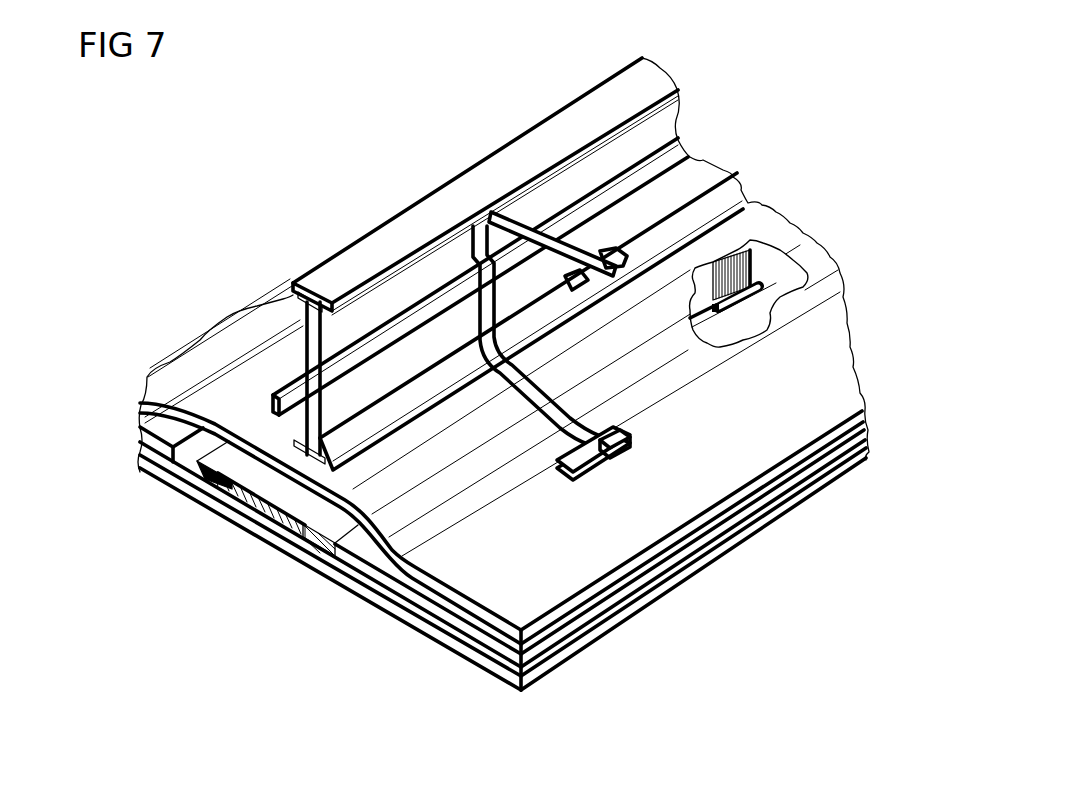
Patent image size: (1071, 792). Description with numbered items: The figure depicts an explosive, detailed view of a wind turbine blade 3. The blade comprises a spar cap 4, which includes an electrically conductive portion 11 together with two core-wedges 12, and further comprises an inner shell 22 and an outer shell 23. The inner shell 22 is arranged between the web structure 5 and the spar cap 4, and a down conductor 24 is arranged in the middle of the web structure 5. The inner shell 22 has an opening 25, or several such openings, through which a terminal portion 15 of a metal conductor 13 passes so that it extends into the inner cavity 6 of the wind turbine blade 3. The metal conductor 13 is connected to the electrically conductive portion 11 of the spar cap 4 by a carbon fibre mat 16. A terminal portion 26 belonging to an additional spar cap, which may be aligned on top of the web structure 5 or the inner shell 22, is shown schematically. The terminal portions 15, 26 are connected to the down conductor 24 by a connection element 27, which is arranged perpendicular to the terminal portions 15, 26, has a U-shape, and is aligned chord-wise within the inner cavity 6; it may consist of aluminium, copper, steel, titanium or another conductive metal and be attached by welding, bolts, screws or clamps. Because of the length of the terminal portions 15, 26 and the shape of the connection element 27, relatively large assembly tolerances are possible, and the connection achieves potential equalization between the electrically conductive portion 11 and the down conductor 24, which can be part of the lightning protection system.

The wind turbine blade 3 is at (292, 215).
The spar cap 4 is at (246, 527).
The web structure 5 is at (388, 246).
The inner cavity 6 is at (160, 328).
The electrically conductive portion 11 is at (232, 511).
The core-wedge 12 is at (205, 476).
The metal conductor 13 is at (762, 281).
The terminal portion 15 is at (590, 464).
The carbon fibre mat 16 is at (747, 240).
The inner shell 22 is at (558, 573).
The outer shell 23 is at (398, 611).
The down conductor 24 is at (290, 398).
The opening 25 is at (631, 441).
The terminal portion of the additional spar cap 26 is at (613, 250).
The connection element 27 is at (519, 222).